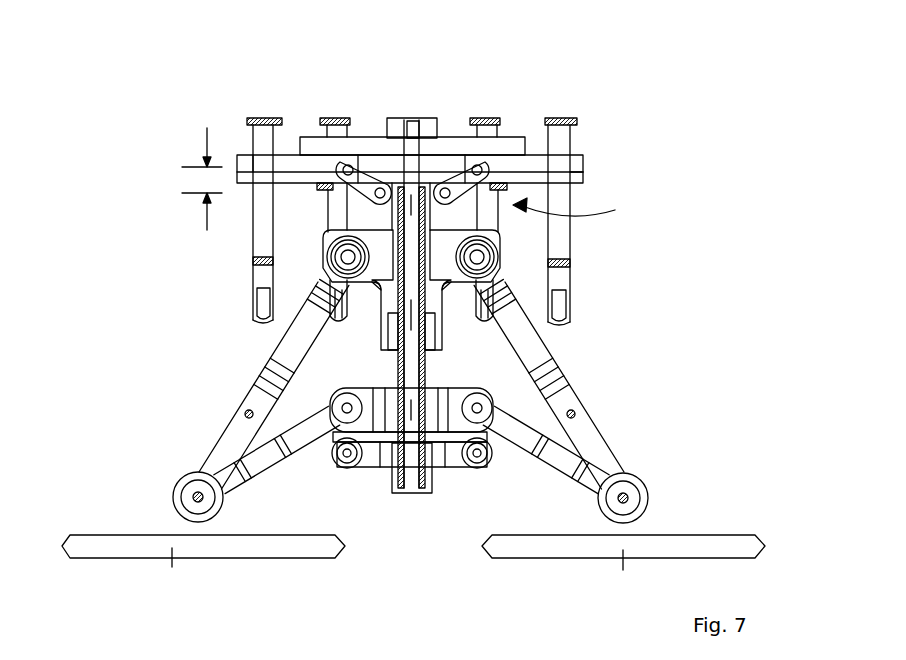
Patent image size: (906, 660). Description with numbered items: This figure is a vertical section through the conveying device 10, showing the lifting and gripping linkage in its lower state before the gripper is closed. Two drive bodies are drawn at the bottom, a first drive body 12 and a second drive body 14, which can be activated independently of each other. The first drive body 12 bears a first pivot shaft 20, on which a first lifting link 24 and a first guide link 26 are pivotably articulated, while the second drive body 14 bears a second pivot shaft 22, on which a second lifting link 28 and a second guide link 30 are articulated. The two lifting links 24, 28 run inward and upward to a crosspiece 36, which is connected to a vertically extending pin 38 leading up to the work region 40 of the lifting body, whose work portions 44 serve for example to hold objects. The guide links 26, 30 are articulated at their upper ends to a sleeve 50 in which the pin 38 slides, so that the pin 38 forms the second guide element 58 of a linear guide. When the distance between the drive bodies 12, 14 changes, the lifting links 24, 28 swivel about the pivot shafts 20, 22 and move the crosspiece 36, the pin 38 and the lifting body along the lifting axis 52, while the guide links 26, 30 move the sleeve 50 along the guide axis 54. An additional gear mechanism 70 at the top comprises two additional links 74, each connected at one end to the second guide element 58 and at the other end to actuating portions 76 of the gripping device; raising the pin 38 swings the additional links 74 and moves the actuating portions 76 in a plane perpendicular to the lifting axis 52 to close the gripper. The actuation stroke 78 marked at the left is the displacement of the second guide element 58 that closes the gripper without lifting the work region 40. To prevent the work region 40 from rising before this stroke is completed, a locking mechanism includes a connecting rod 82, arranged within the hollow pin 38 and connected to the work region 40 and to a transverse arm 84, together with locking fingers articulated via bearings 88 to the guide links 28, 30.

The conveying device 10 is at (147, 103).
The first drive body 12 is at (623, 576).
The second drive body 14 is at (203, 576).
The first pivot shaft 20 is at (630, 492).
The second pivot shaft 22 is at (190, 490).
The first lifting link 24 is at (560, 461).
The first guide link 26 is at (266, 467).
The second lifting link 28 is at (540, 347).
The second guide link 30 is at (272, 357).
The crosspiece 36 is at (457, 395).
The pin 38 is at (397, 369).
The work region 40 is at (453, 137).
The work portions 44 is at (358, 186).
The sleeve 50 is at (405, 250).
The lifting axis 52 is at (411, 494).
The guide axis 54 is at (387, 287).
The second guide element 58 is at (438, 367).
The additional gear mechanism 70 is at (579, 211).
The additional links 74 is at (430, 137).
The actuating portions 76 is at (350, 162).
The actuation stroke 78 is at (207, 223).
The connecting rod 82 is at (400, 137).
The arm 84 is at (370, 458).
The bearings 88 is at (244, 412).